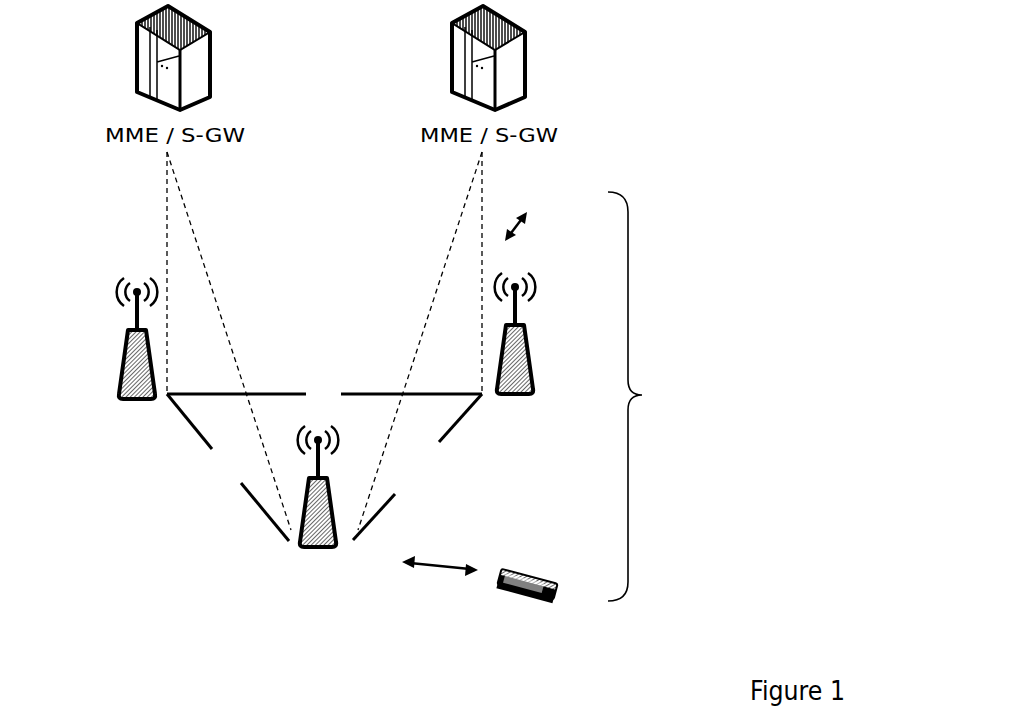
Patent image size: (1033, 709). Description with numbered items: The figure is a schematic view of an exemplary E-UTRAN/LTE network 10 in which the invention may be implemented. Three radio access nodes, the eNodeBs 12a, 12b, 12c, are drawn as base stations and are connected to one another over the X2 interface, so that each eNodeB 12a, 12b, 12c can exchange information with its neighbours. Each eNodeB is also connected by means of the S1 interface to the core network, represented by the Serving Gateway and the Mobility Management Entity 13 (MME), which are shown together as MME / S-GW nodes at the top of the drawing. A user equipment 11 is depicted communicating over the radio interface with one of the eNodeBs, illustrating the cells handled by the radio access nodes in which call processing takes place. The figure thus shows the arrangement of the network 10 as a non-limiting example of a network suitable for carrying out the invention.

The E-UTRAN/LTE network 10 is at (590, 116).
The user equipment (UE) 11 is at (492, 593).
The eNodeB 12a is at (313, 523).
The eNodeB 12b is at (128, 362).
The eNodeB 12c is at (527, 350).
The Mobility Management Entity 13 is at (512, 67).